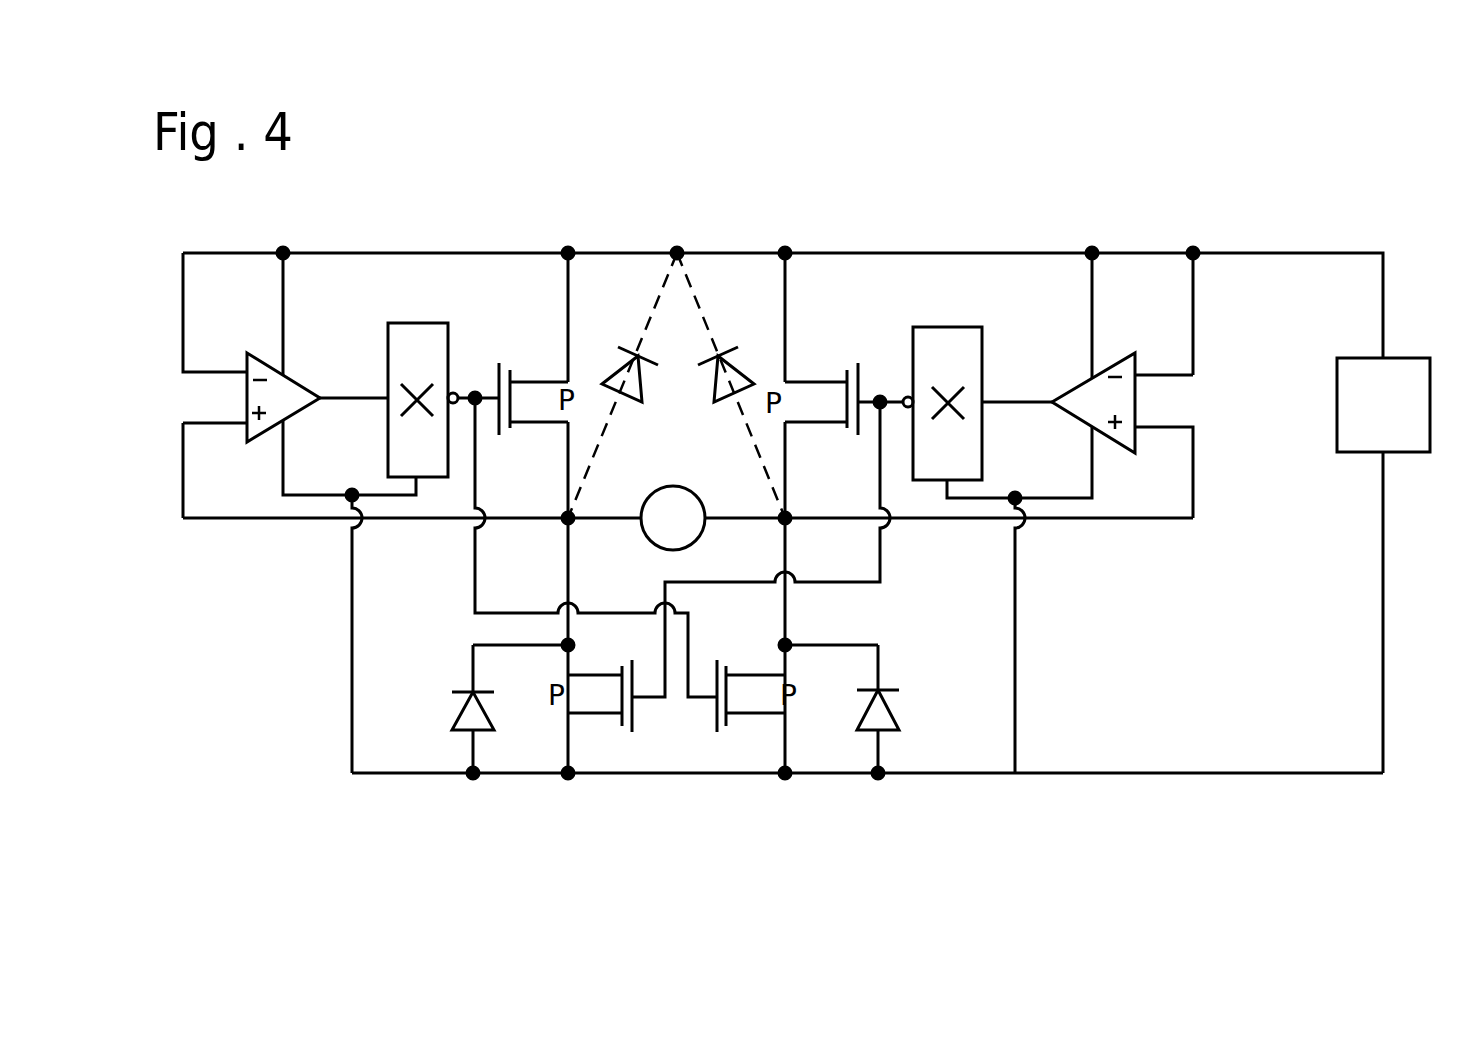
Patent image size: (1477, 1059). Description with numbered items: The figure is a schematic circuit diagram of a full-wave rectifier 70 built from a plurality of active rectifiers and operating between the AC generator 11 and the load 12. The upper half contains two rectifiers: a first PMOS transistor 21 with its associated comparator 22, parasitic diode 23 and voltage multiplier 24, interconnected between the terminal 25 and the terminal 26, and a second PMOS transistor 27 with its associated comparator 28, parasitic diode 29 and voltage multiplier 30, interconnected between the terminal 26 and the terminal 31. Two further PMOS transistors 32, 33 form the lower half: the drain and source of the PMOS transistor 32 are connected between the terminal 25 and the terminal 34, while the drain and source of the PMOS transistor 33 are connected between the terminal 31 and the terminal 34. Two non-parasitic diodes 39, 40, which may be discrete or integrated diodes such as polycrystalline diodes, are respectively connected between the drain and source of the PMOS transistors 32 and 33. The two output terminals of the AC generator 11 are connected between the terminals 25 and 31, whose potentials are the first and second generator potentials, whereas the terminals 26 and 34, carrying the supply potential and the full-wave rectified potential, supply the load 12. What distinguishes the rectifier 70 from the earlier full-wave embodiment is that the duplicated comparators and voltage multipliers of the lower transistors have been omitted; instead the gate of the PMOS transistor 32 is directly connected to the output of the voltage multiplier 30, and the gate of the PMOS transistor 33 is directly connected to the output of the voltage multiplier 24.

The AC generator 11 is at (690, 502).
The load 12 is at (1412, 372).
The first PMOS transistor 21 is at (495, 383).
The comparator 22 is at (288, 390).
The parasitic diode 23 is at (623, 373).
The voltage multiplier 24 is at (413, 338).
The terminal 25 is at (563, 515).
The terminal 26 is at (677, 253).
The PMOS transistor 27 is at (845, 380).
The comparator 28 is at (1117, 377).
The parasitic diode 29 is at (733, 370).
The voltage multiplier 30 is at (962, 367).
The terminal 31 is at (793, 513).
The PMOS transistor 32 is at (647, 680).
The PMOS transistor 33 is at (708, 673).
The terminal 34 is at (565, 776).
The non-parasitic diode 39 is at (462, 718).
The non-parasitic diode 40 is at (883, 720).
The rectifier 70 is at (1270, 200).